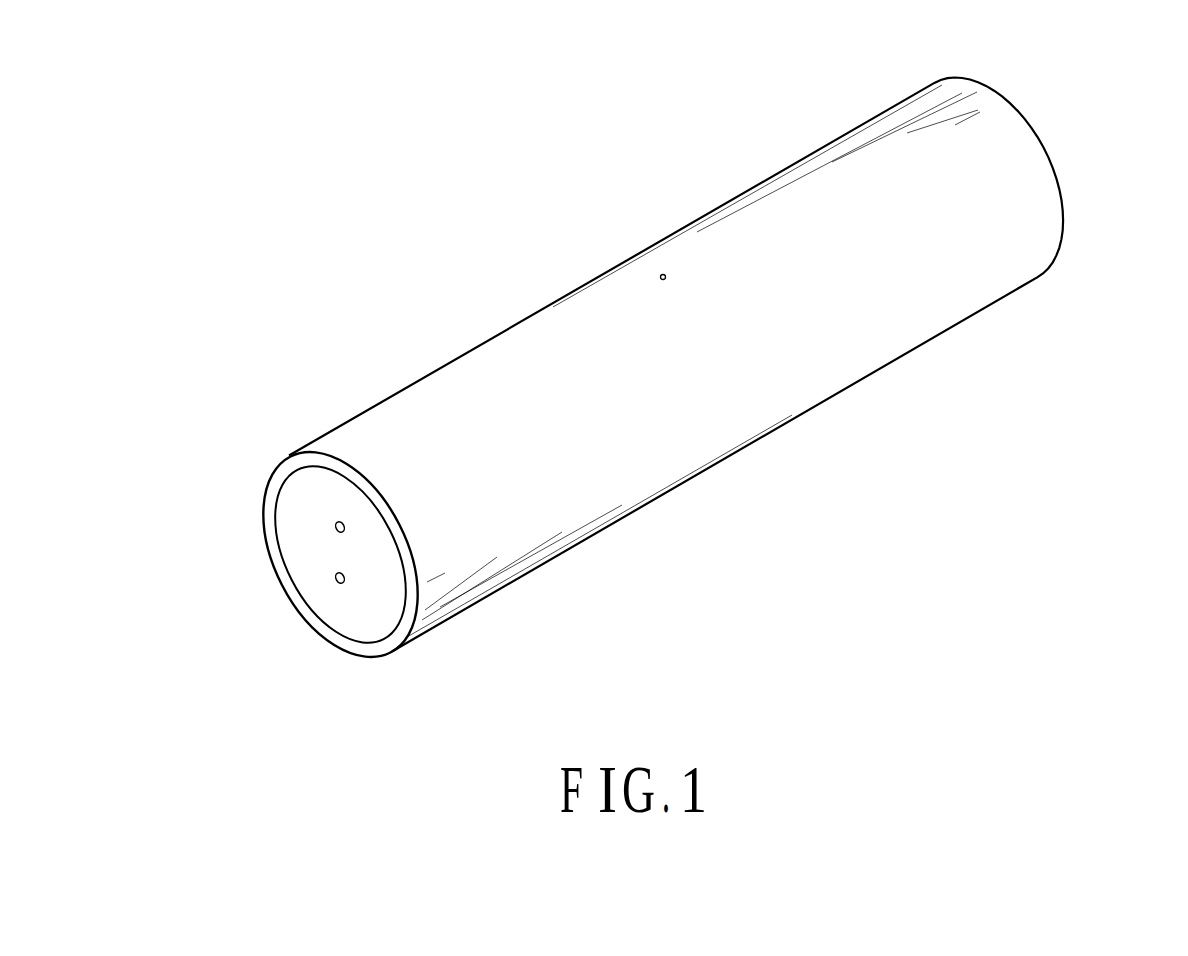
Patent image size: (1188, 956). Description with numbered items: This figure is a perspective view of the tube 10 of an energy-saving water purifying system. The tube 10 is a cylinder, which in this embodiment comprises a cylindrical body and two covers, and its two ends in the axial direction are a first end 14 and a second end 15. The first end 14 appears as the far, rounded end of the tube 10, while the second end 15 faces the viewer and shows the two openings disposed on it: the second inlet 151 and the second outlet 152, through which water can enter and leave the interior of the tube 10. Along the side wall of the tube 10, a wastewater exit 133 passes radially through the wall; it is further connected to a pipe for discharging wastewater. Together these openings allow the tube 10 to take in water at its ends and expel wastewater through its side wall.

The tube 10 is at (678, 380).
The first end 14 is at (728, 365).
The wastewater exit 133 is at (663, 274).
The second end 15 is at (318, 555).
The second inlet 151 is at (335, 524).
The second outlet 152 is at (338, 582).